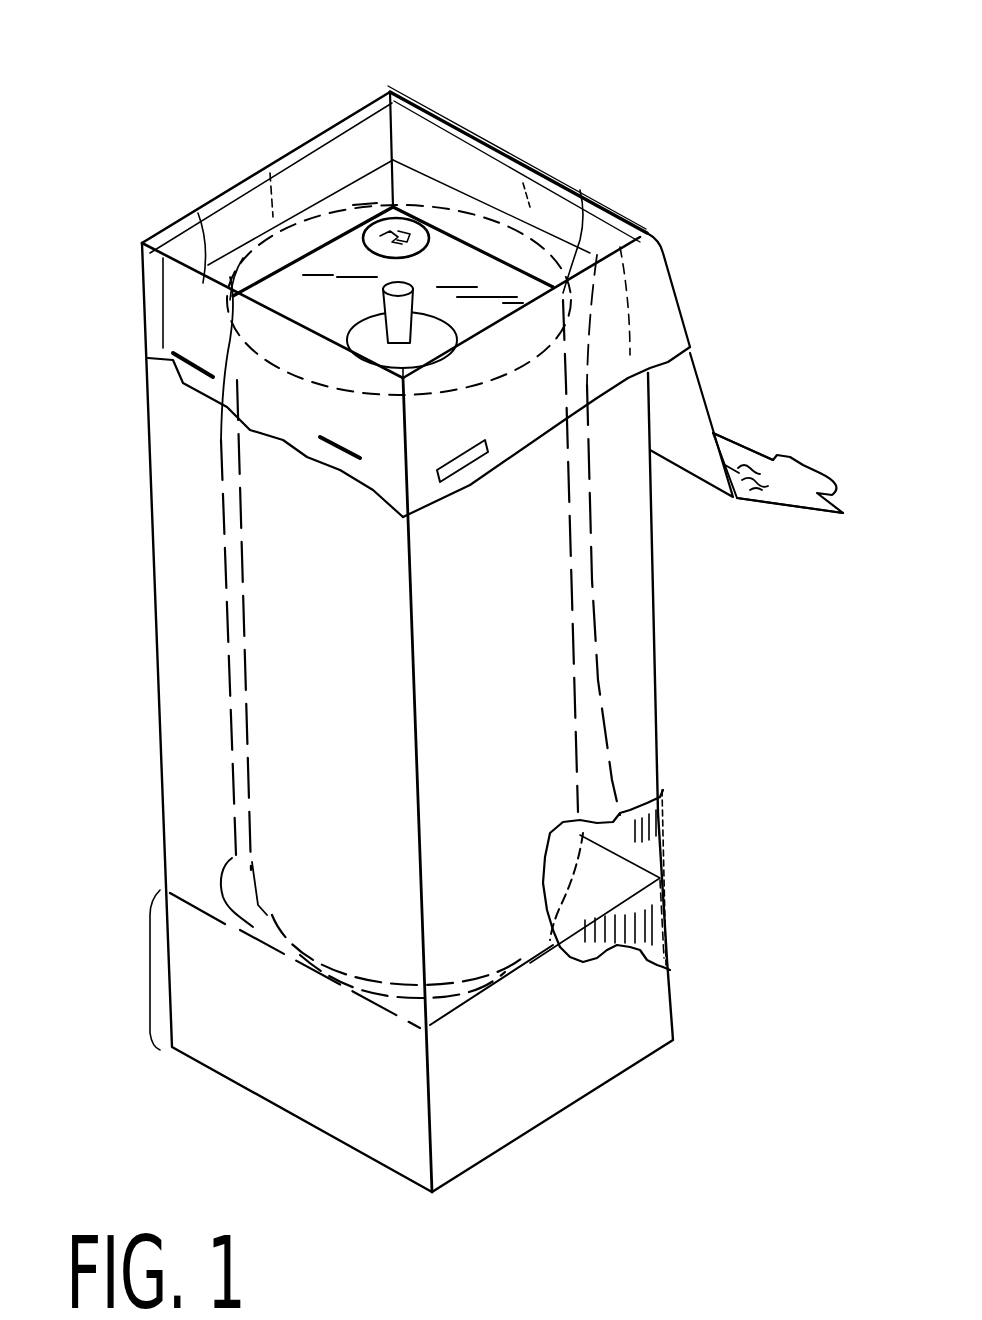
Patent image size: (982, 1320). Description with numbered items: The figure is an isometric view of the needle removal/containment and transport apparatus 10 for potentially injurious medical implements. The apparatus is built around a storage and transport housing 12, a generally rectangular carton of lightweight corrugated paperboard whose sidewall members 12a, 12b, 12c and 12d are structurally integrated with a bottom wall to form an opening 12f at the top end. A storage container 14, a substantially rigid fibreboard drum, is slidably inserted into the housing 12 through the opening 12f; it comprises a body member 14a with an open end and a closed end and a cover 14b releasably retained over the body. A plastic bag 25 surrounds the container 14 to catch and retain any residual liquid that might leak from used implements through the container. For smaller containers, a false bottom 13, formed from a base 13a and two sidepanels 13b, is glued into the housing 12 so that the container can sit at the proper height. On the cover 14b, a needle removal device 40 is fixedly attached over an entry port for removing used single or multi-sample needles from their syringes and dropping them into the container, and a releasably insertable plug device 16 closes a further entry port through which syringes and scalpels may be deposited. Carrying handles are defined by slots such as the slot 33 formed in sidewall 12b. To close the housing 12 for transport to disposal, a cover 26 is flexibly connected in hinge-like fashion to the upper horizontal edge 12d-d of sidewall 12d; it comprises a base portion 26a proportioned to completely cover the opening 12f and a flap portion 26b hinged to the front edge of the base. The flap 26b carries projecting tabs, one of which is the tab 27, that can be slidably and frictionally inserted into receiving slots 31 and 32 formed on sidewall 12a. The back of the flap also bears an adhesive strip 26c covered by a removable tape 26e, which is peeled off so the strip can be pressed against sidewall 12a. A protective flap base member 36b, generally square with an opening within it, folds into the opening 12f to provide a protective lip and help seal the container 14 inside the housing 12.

The needle removal/containment and transport apparatus 10 is at (340, 13).
The storage and transport housing 12 is at (152, 505).
The sidewall member 12a is at (351, 722).
The sidewall member 12b is at (472, 915).
The sidewall member 12c is at (195, 759).
The sidewall member 12d is at (633, 833).
The upper horizontal edge of sidewall 12d 12d-d is at (613, 207).
The opening 12f is at (353, 256).
The false bottom 13 is at (334, 970).
The base 13a is at (216, 871).
The sidepanels 13b is at (670, 967).
The storage container 14 is at (243, 653).
The body member 14a is at (268, 593).
The cover 14b is at (470, 227).
The plug device 16 is at (423, 327).
The plastic bag 25 is at (657, 283).
The cover 26 is at (690, 420).
The base portion 26a is at (716, 436).
The flap portion 26b is at (735, 449).
The adhesive strip 26c is at (740, 496).
The removable tape 26e is at (737, 460).
The projecting tab 27 is at (807, 470).
The receiving slot 31 is at (340, 443).
The receiving slot 32 is at (187, 372).
The slot 33 is at (463, 473).
The base member 36b is at (394, 160).
The needle removal device 40 is at (400, 212).